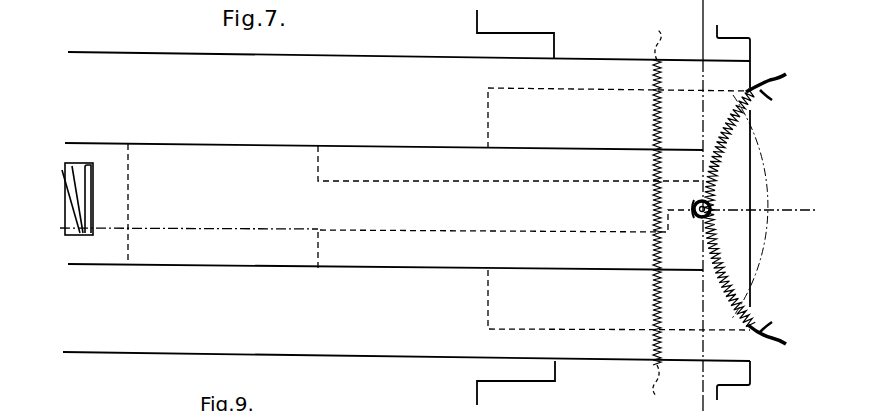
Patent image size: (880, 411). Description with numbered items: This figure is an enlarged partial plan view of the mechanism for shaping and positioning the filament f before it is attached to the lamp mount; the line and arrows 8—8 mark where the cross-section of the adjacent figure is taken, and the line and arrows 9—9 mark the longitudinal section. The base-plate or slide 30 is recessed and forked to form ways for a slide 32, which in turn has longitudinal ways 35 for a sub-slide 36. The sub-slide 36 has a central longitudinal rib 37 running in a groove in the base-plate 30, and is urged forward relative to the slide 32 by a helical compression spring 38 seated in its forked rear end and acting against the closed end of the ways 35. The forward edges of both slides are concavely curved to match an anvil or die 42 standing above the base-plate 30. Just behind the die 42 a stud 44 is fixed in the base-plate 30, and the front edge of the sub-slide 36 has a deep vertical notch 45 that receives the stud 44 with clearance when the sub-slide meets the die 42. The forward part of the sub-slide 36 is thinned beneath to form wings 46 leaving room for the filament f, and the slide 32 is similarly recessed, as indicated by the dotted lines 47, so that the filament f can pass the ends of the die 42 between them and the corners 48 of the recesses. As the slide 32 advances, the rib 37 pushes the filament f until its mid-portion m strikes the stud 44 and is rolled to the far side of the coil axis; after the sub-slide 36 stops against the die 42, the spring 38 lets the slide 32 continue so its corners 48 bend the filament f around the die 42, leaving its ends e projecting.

The section line 8— 8 is at (704, 15).
The section line 9— 9 is at (65, 232).
The base-plate or slide 30 is at (752, 378).
The slide 32 is at (421, 358).
The longitudinal ways 35 is at (193, 265).
The sub-slide 36 is at (372, 270).
The central longitudinal rib 37 is at (444, 232).
The helical compression spring 38 is at (74, 175).
The anvil or die 42 is at (751, 250).
The stud 44 is at (712, 205).
The vertical notch 45 is at (697, 201).
The wings 46 is at (565, 262).
The recesses 47 is at (581, 88).
The corners of the recesses 48 is at (750, 90).
The filament ends e is at (775, 211).
The filament f is at (655, 116).
The mid-portion of the filament m is at (648, 192).